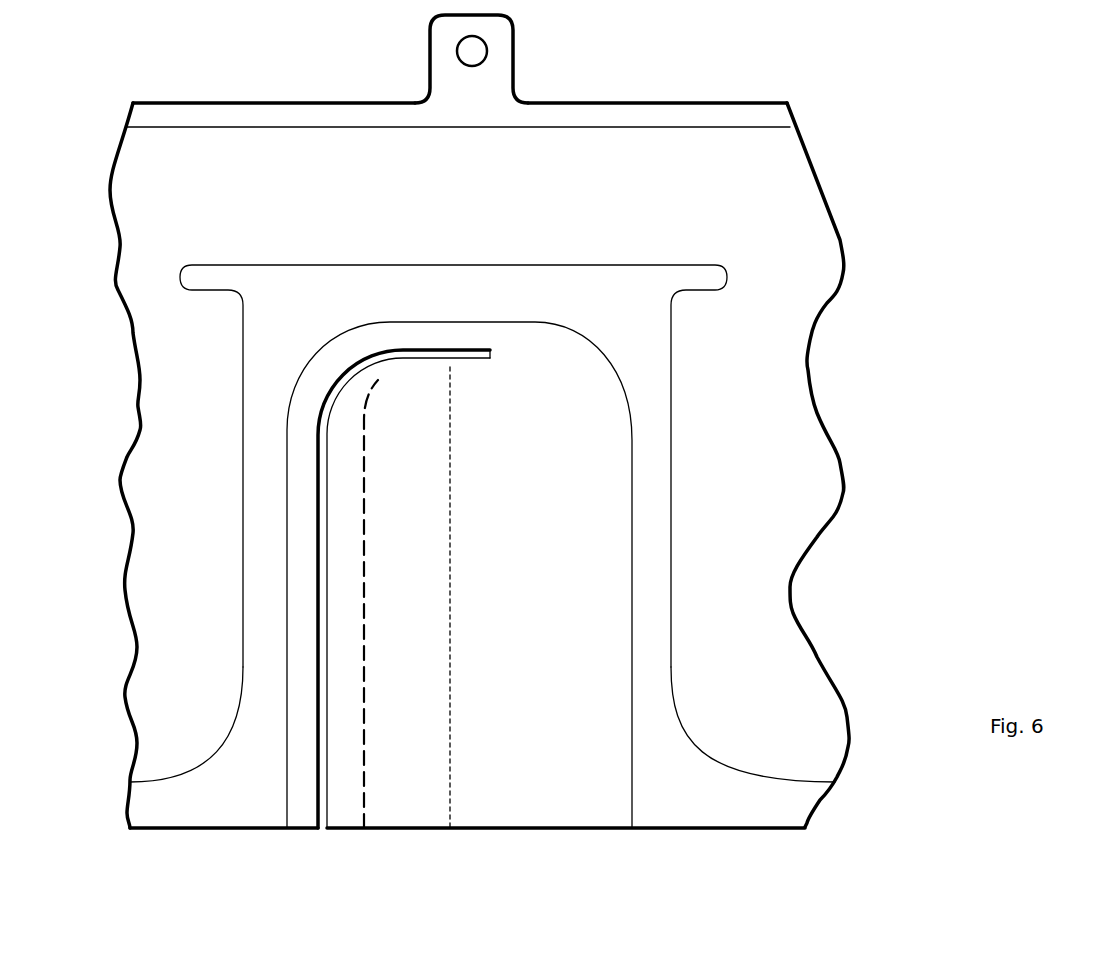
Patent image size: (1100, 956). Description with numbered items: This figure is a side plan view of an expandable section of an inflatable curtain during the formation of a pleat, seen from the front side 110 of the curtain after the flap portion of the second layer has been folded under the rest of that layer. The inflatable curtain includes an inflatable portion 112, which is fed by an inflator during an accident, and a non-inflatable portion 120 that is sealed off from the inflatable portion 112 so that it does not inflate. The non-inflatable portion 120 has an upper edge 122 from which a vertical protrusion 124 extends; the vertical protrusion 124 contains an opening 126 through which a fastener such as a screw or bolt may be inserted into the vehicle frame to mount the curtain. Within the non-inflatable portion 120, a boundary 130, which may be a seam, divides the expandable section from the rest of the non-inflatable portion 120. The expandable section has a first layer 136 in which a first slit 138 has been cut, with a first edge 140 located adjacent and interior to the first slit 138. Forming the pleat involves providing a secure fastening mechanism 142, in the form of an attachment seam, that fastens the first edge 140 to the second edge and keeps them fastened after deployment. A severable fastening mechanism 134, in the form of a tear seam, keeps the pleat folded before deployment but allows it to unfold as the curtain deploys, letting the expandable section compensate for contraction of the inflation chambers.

The front side 110 is at (790, 193).
The inflatable portion 112 is at (715, 142).
The non-inflatable portion 120 is at (210, 782).
The upper edge 122 is at (642, 103).
The vertical protrusion 124 is at (507, 55).
The opening 126 is at (457, 50).
The boundary 130 is at (468, 322).
The severable fastening mechanism 134 is at (450, 520).
The first layer 136 is at (532, 395).
The first slit 138 is at (328, 478).
The first edge 140 is at (408, 593).
The secure fastening mechanism 142 is at (365, 590).